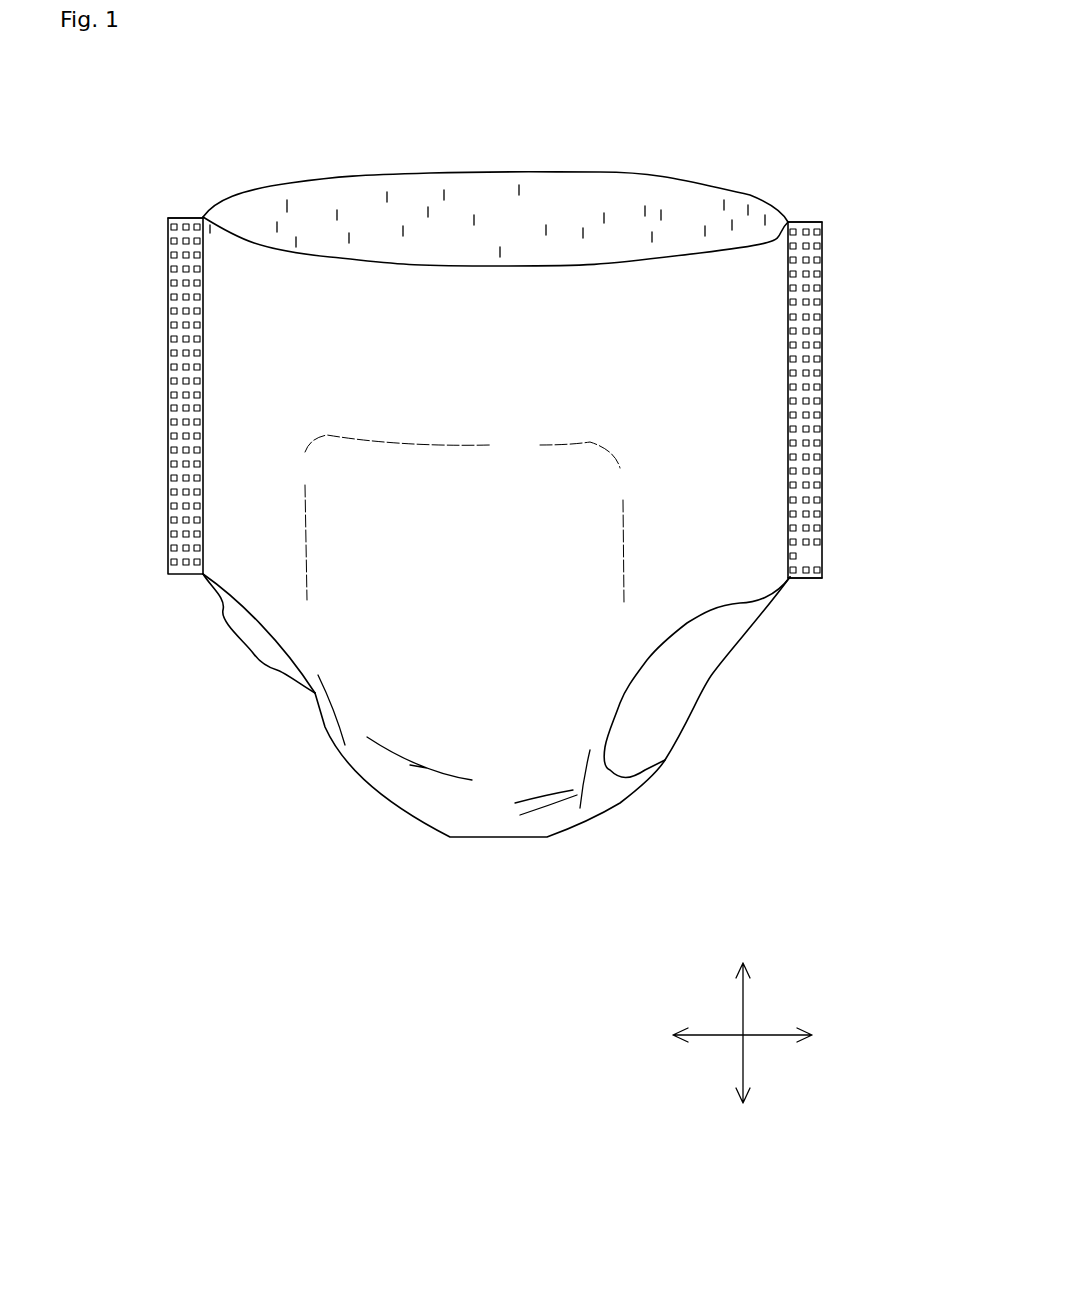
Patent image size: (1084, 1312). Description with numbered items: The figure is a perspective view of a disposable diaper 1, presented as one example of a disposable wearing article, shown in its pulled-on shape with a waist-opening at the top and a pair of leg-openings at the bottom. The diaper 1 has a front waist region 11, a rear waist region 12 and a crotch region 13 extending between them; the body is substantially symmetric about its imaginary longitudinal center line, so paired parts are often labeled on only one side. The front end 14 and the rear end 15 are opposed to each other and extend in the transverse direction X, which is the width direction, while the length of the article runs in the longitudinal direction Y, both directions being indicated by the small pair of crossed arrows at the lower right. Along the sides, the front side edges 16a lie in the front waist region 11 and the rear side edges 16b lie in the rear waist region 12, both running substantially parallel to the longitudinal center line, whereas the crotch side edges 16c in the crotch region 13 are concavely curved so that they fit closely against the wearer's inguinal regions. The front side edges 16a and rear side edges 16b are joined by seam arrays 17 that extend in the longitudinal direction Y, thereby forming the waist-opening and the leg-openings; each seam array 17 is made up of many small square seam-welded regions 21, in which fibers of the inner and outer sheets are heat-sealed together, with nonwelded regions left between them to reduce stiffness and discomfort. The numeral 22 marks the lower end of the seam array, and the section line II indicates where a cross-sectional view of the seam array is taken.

The diaper 1 is at (710, 124).
The front waist region 11 is at (240, 300).
The rear waist region 12 is at (700, 217).
The crotch region 13 is at (470, 807).
The front end 14 is at (510, 252).
The rear end 15 is at (536, 172).
The front side edges 16a is at (170, 385).
The rear side edges 16b is at (183, 216).
The crotch side edges 16c is at (298, 662).
The seam arrays 17 is at (175, 250).
The seam-welded regions 21 is at (805, 578).
The side seal lower end 22 is at (818, 563).
The section line II- II is at (160, 508).
The transverse direction X is at (770, 1035).
The longitudinal direction Y is at (745, 1003).